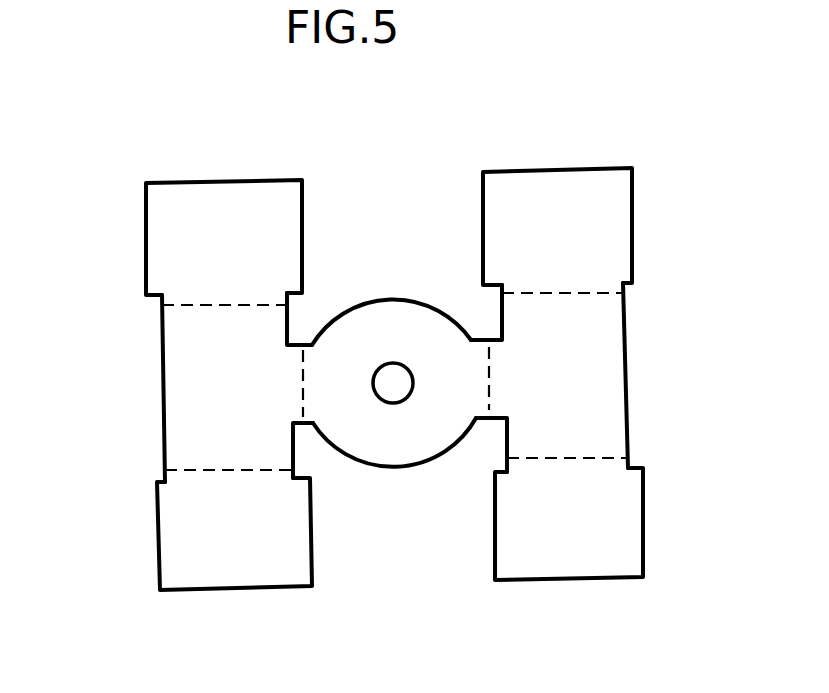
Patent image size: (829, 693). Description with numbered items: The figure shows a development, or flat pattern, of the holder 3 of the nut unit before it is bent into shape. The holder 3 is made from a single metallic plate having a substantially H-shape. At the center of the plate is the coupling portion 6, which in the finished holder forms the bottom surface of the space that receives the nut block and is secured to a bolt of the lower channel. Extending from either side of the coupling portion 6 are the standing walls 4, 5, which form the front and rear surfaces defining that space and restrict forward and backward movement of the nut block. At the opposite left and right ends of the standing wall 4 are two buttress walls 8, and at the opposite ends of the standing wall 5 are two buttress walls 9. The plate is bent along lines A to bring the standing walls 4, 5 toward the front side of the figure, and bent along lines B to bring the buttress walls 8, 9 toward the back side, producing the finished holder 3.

The holder 3 is at (397, 175).
The standing wall 4 is at (613, 433).
The standing wall 5 is at (185, 457).
The coupling portion 6 is at (394, 312).
The buttress walls 8 is at (613, 202).
The buttress walls 9 is at (196, 198).
The lines A is at (483, 388).
The lines B is at (238, 304).